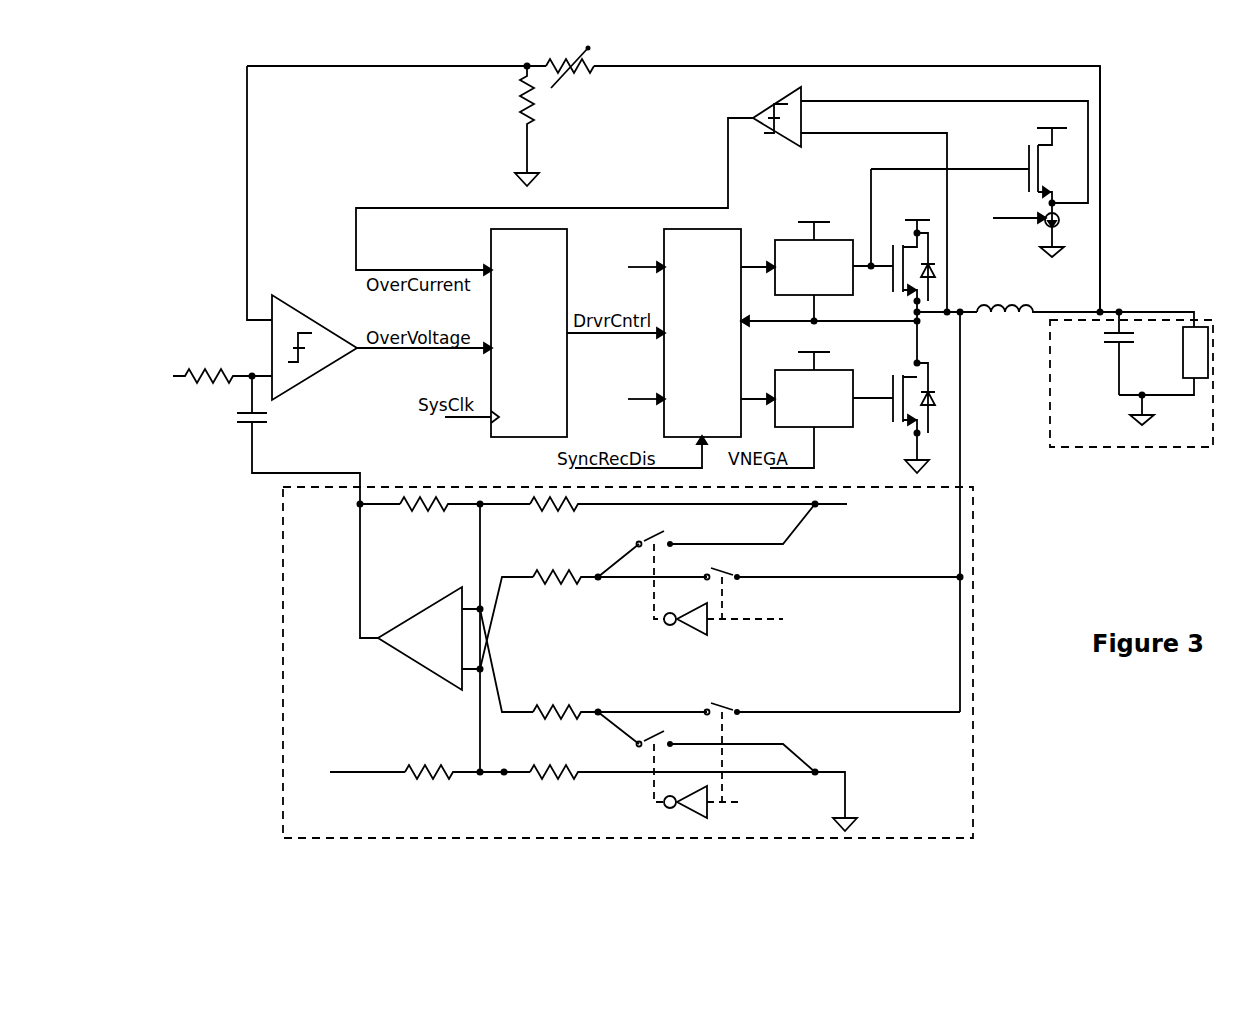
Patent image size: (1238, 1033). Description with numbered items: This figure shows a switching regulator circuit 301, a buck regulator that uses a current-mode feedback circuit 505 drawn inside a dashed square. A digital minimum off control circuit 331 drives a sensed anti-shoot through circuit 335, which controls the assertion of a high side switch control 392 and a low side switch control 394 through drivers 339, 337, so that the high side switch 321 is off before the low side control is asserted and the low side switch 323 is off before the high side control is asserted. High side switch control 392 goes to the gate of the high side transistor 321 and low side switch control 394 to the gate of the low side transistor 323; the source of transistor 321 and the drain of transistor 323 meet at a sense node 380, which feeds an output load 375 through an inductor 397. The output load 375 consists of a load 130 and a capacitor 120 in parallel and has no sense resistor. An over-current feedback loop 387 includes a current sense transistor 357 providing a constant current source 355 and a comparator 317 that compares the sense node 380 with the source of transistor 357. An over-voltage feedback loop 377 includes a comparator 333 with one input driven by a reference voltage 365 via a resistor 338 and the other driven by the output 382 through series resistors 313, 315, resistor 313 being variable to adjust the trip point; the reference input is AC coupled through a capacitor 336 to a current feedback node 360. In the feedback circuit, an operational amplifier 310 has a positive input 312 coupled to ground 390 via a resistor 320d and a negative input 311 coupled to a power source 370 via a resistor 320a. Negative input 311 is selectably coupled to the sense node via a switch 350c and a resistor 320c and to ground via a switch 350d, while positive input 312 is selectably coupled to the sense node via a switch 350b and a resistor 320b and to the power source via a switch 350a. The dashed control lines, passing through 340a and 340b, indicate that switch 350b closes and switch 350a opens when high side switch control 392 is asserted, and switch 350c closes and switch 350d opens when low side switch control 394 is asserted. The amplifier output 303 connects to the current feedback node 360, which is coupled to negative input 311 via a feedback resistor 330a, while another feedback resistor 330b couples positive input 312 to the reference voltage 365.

The switching regulator circuit 301 is at (213, 146).
The resistor 313 is at (590, 76).
The resistor 315 is at (520, 104).
The ground 390 is at (532, 175).
The comparator 317 is at (750, 110).
The over-current feedback loop 387 is at (864, 97).
The over-voltage feedback loop 377 is at (1120, 137).
The current sense transistor 357 is at (1016, 143).
The high side switch control 392 is at (630, 250).
The power source 370 is at (917, 212).
The constant current source 355 is at (1037, 228).
The digital minimum off control circuit 331 is at (529, 333).
The sensed anti-shoot through circuit 335 is at (702, 333).
The driver 339 is at (817, 267).
The driver 337 is at (817, 378).
The high side transistor 321 is at (896, 293).
The low side transistor 323 is at (896, 427).
The low side switch control 394 is at (628, 399).
The sense node 380 is at (966, 313).
The inductor 397 is at (1036, 306).
The output 382 is at (1103, 306).
The capacitor 120 is at (1112, 340).
The load 130 is at (1203, 379).
The output load 375 is at (1133, 383).
The resistor 338 is at (223, 366).
The reference voltage 365 is at (150, 389).
The capacitor 336 is at (240, 421).
The comparator 333 is at (320, 379).
The current feedback node 360 is at (358, 505).
The feedback resistor 330a is at (438, 516).
The resistor 320a is at (572, 516).
The negative input 311 is at (476, 605).
The operational amplifier 310 is at (420, 638).
The positive input 312 is at (476, 672).
The output 303 is at (363, 641).
The resistor 320b is at (575, 579).
The resistor 320c is at (571, 707).
The feedback resistor 330b is at (453, 775).
The resistor 320d is at (569, 775).
The switch 350a is at (655, 536).
The switch 350b is at (725, 571).
The switch 350c is at (725, 706).
The switch 350d is at (655, 738).
The inverter 340a is at (694, 629).
The inverter 340b is at (694, 811).
The reference generation circuit 505 is at (628, 662).